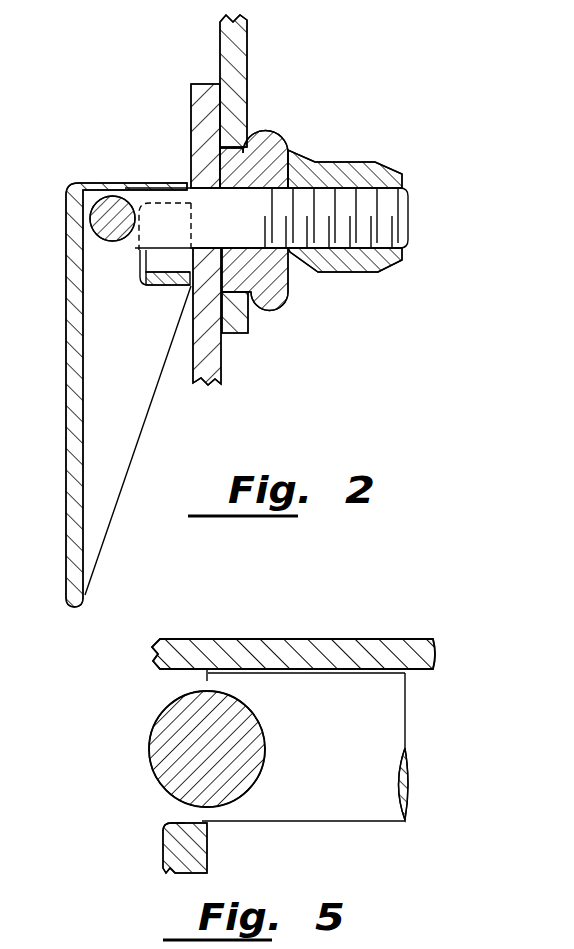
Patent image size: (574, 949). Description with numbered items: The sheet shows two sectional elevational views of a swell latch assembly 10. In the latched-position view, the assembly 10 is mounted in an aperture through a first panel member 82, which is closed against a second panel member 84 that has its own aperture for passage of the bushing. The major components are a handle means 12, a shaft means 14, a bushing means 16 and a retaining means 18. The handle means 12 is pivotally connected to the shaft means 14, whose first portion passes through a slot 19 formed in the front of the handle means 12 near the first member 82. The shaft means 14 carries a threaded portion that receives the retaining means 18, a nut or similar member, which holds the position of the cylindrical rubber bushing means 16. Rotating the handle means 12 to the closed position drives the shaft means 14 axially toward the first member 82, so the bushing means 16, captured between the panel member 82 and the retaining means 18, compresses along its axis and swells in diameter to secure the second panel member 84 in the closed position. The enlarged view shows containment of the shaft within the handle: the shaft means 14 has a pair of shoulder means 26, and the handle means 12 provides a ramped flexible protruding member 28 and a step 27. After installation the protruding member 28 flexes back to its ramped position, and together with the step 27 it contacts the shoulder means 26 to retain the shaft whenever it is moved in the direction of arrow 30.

In FIG. 2, the swell latch assembly 10 is at (133, 133).
In FIG. 2, the handle means 12 is at (88, 372).
In FIG. 5, the handle means 12 is at (207, 850).
In FIG. 2, the shaft means 14 is at (287, 200).
In FIG. 2, the bushing means 16 is at (271, 285).
In FIG. 2, the retaining means 18 is at (377, 166).
In FIG. 2, the slot 19 is at (110, 182).
In FIG. 2, the first panel member 82 is at (203, 109).
In FIG. 2, the second panel member 84 is at (233, 57).
In FIG. 5, the shoulder means 26 is at (206, 679).
In FIG. 5, the step 27 is at (232, 660).
In FIG. 5, the flexible protruding member 28 is at (165, 822).
In FIG. 5, the arrow 30 is at (383, 748).